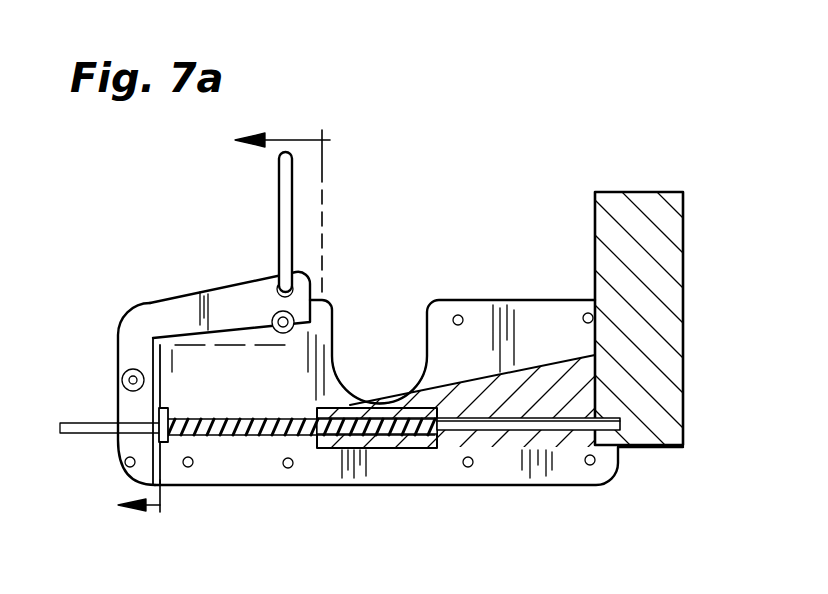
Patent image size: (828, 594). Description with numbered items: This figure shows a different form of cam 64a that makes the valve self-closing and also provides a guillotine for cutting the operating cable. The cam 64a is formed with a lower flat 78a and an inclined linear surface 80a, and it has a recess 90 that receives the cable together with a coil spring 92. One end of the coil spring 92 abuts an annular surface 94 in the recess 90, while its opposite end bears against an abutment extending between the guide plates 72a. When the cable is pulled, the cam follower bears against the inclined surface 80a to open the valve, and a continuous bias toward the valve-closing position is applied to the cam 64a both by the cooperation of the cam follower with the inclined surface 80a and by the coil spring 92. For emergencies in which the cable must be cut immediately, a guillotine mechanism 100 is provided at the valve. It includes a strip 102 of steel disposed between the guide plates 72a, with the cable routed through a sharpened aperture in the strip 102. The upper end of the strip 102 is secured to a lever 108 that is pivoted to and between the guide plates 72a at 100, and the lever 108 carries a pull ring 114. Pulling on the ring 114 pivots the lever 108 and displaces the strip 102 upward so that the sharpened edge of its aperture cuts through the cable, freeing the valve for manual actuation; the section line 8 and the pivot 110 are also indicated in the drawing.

The section line 8- 8 is at (212, 320).
The cam 64a is at (595, 220).
The guide plates 72a is at (385, 485).
The lower flat 78a is at (350, 400).
The inclined linear surface 80a is at (545, 363).
The recess 90 is at (335, 448).
The coil spring 92 is at (255, 418).
The annular surface 94 is at (427, 414).
The guillotine mechanism 100 is at (92, 325).
The strip 102 is at (153, 452).
The lever 108 is at (160, 302).
The pivot 110 is at (122, 380).
The pull ring 114 is at (280, 221).